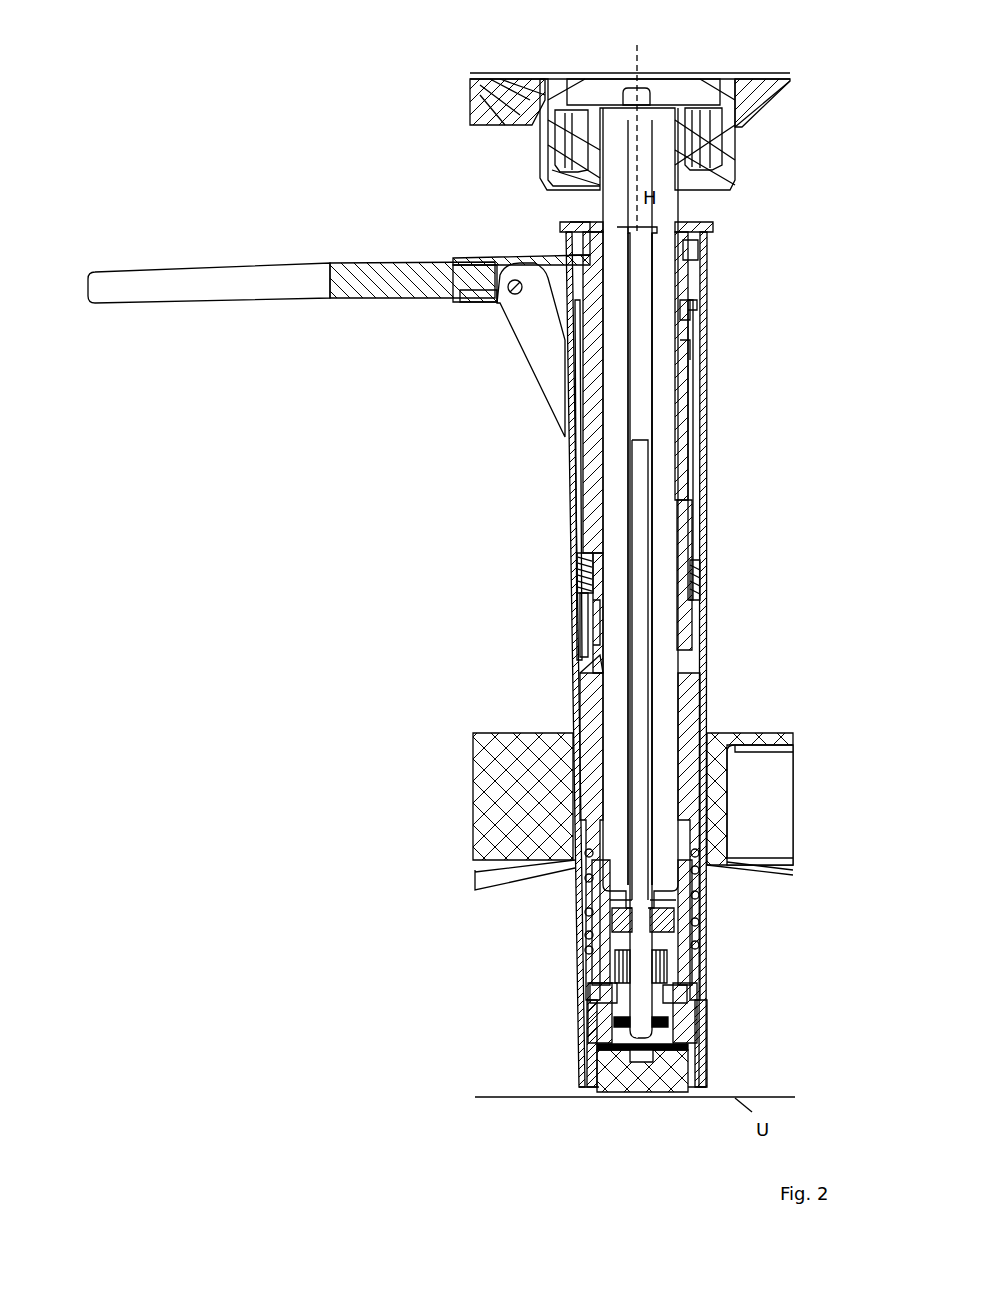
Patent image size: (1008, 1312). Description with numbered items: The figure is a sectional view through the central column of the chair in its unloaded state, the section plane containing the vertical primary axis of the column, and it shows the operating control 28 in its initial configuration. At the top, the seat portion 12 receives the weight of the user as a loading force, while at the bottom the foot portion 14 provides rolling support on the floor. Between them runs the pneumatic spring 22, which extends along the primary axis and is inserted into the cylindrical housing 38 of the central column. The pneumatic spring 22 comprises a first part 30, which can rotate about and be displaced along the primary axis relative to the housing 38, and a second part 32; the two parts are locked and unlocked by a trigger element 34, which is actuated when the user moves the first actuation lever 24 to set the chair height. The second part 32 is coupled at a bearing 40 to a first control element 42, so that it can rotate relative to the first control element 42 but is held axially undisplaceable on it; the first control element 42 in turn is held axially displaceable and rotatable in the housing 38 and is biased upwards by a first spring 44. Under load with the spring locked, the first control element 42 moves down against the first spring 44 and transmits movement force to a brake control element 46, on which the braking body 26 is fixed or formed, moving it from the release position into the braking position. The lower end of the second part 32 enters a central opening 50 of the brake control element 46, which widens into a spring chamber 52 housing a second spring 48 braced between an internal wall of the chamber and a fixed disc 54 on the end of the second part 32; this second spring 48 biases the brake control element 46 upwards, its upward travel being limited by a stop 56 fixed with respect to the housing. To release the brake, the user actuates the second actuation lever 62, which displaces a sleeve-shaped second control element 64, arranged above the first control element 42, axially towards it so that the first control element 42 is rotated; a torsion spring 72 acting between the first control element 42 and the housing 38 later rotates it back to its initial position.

The operating control 28 is at (278, 143).
The first actuation lever 24 is at (540, 76).
The seat portion 12 is at (723, 183).
The trigger element 34 is at (650, 92).
The pneumatic spring 22 is at (660, 213).
The second part 32 is at (642, 950).
The cylindrical housing 38 is at (703, 628).
The first part 30 is at (665, 284).
The second control element 64 is at (687, 468).
The torsion spring 72 is at (578, 578).
The first control element 42 is at (688, 705).
The foot portion 14 is at (500, 755).
The first spring 44 is at (698, 868).
The bearing 40 is at (702, 922).
The central opening 50 is at (640, 985).
The stop 56 is at (680, 1000).
The brake control element 46 is at (690, 1032).
The second spring 48 is at (665, 1007).
The fixed disc 54 is at (585, 1027).
The spring chamber 52 is at (618, 1040).
The braking body 26 is at (643, 1090).
The second actuation lever 62 is at (165, 285).